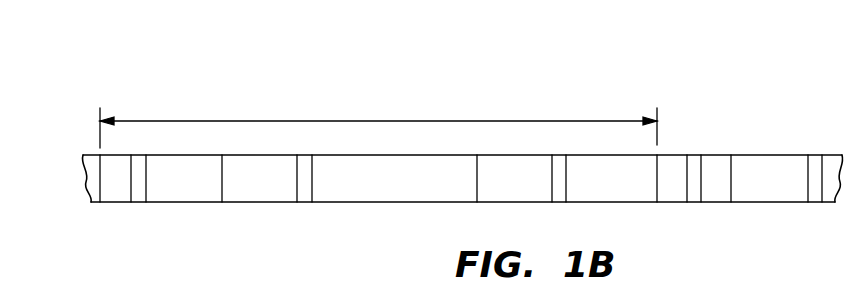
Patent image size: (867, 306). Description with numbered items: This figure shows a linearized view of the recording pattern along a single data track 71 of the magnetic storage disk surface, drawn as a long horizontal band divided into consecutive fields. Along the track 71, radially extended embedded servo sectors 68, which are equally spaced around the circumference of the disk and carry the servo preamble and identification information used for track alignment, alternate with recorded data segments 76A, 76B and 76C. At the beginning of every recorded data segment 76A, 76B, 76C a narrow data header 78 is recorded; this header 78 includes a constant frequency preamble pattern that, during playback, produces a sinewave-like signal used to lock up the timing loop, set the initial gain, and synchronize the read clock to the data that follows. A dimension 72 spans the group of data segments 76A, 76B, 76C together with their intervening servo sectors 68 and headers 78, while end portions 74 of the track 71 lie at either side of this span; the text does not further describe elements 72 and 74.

The data track 71 is at (90, 190).
The length of set of images 72 is at (442, 120).
The end segment 74 is at (117, 193).
The recorded data segment 76A is at (183, 167).
The recorded data segment 76B is at (390, 170).
The recorded data segment 76C is at (612, 172).
The data header 78 is at (138, 157).
The embedded servo sector 68 is at (252, 167).